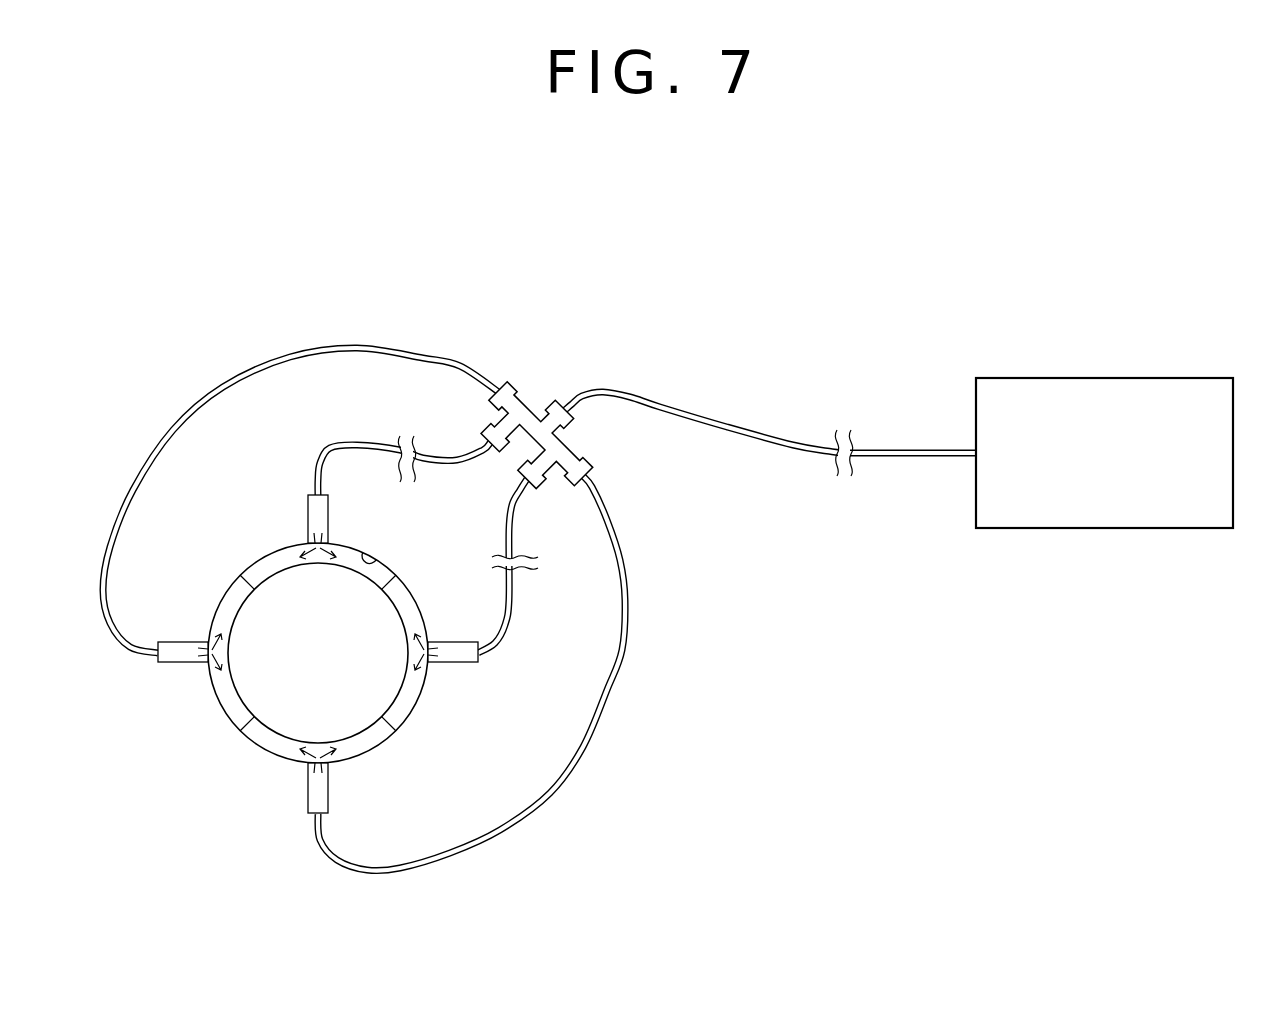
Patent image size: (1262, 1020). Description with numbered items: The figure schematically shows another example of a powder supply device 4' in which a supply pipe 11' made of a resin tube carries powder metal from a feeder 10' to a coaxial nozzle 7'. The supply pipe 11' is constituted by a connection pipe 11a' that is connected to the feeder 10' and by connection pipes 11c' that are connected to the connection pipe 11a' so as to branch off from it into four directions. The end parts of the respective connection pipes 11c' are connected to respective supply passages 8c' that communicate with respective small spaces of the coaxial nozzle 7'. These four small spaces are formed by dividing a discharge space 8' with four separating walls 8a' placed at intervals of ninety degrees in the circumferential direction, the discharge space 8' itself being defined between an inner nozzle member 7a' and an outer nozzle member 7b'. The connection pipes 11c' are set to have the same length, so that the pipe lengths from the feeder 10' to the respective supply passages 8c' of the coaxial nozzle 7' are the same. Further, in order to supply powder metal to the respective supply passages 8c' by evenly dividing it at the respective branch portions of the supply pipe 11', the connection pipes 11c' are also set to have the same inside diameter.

The powder supply device 4' is at (1095, 170).
The coaxial nozzle 7' is at (354, 624).
The inner nozzle member 7a' is at (318, 653).
The outer nozzle member 7b' is at (354, 653).
The discharge space 8' is at (398, 535).
The separating wall 8a' is at (304, 618).
The supply passage 8c' is at (318, 648).
The feeder 10' is at (1104, 412).
The supply pipe 11' is at (539, 550).
The connection pipe 11a' is at (770, 421).
The connection pipe 11c' is at (399, 585).